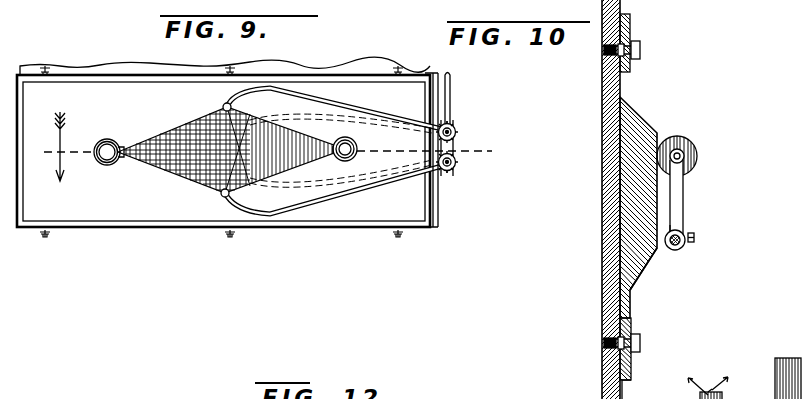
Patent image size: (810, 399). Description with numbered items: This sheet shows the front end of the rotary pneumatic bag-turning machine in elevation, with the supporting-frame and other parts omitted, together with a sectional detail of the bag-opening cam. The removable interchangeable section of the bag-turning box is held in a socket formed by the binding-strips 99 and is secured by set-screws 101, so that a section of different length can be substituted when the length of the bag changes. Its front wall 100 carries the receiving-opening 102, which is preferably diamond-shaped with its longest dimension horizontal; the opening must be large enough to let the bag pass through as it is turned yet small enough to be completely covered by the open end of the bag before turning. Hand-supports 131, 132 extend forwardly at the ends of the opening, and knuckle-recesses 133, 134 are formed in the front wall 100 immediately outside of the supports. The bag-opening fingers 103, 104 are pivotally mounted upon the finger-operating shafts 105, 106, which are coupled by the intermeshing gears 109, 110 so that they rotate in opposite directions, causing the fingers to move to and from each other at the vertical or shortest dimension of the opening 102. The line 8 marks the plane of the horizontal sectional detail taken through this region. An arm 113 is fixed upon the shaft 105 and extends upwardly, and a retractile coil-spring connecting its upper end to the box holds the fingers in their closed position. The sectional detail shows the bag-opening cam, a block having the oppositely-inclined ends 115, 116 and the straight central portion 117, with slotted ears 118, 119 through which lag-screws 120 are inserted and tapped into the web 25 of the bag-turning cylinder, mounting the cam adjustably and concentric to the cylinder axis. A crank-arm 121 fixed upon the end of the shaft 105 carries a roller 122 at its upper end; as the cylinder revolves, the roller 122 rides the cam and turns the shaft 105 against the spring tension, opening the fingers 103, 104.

In FIG. 9, the section line 8 is at (268, 146).
In FIG. 10, the web 25 is at (603, 271).
In FIG. 9, the binding-strips 99 is at (316, 66).
In FIG. 9, the front wall 100 is at (223, 151).
In FIG. 9, the set-screws 101 is at (46, 66).
In FIG. 9, the receiving-opening 102 is at (176, 163).
In FIG. 9, the bag-opening finger 103 is at (368, 113).
In FIG. 9, the bag-opening finger 104 is at (387, 186).
In FIG. 9, the finger-operating shaft 105 is at (452, 124).
In FIG. 10, the finger-operating shaft 105 is at (745, 254).
In FIG. 9, the finger-operating shaft 106 is at (456, 172).
In FIG. 9, the intermeshing gear 109 is at (458, 132).
In FIG. 9, the intermeshing gear 110 is at (458, 162).
In FIG. 9, the arm 113 is at (452, 80).
In FIG. 10, the inclined end 115 is at (642, 119).
In FIG. 10, the inclined end 116 is at (645, 270).
In FIG. 10, the straight central portion 117 is at (684, 195).
In FIG. 10, the slotted ear 118 is at (631, 23).
In FIG. 10, the slotted ear 119 is at (632, 375).
In FIG. 10, the lag-screws 120 is at (640, 50).
In FIG. 10, the crank-arm 121 is at (684, 222).
In FIG. 10, the roller 122 is at (696, 148).
In FIG. 9, the hand-support 131 is at (124, 146).
In FIG. 9, the hand-support 132 is at (338, 158).
In FIG. 9, the knuckle-recess 133 is at (104, 139).
In FIG. 9, the knuckle-recess 134 is at (357, 150).